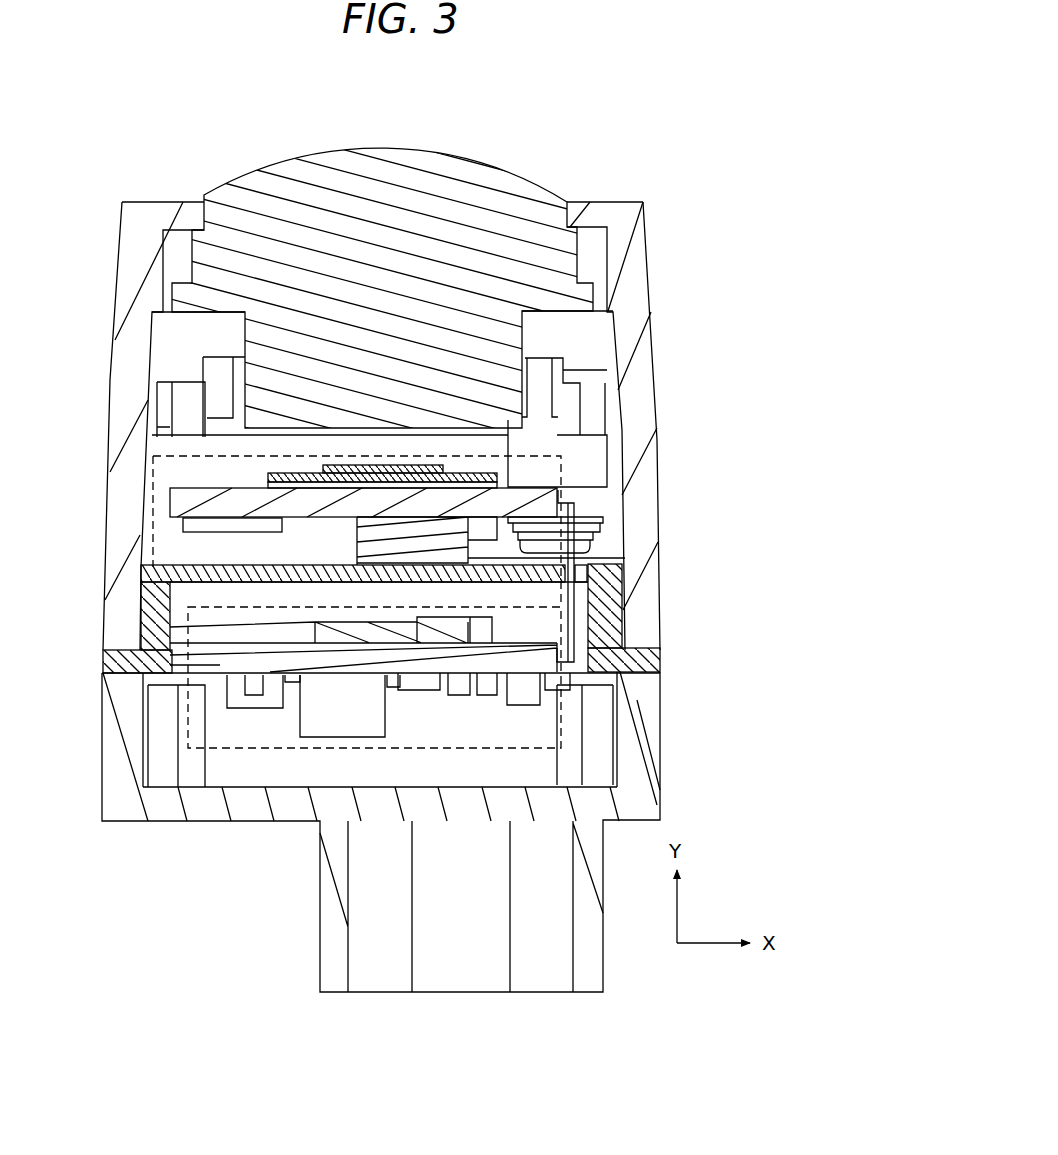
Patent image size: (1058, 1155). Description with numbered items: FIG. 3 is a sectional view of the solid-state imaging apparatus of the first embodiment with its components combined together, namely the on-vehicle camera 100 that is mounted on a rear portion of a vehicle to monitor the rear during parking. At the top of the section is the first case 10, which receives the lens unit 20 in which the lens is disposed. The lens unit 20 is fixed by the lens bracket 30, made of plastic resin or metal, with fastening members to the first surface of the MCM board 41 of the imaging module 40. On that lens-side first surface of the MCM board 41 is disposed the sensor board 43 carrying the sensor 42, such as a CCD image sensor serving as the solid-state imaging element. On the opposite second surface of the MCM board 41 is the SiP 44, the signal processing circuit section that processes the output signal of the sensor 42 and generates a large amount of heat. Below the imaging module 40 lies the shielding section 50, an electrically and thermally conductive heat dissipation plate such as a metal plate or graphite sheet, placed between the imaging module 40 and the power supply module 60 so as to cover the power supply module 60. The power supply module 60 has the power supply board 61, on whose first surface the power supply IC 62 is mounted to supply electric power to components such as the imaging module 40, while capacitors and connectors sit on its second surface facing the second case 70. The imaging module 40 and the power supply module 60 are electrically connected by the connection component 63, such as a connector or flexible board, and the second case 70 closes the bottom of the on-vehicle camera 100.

The on-vehicle camera 100 is at (540, 115).
The first case 10 is at (620, 222).
The lens unit 20 is at (560, 282).
The lens bracket 30 is at (578, 397).
The imaging module 40 is at (538, 467).
The MCM board 41 is at (180, 498).
The sensor 42 is at (267, 475).
The sensor board 43 is at (267, 475).
The SiP 44 is at (230, 527).
The shielding section 50 is at (623, 582).
The power supply module 60 is at (517, 730).
The power supply board 61 is at (122, 660).
The power supply IC 62 is at (142, 622).
The connection component 63 is at (585, 614).
The second case 70 is at (633, 783).